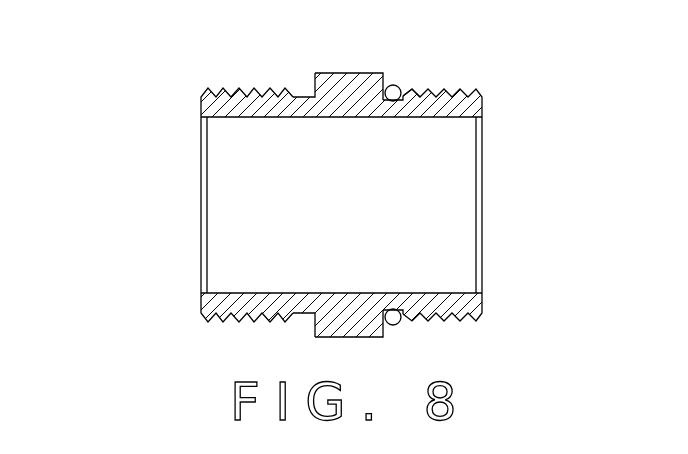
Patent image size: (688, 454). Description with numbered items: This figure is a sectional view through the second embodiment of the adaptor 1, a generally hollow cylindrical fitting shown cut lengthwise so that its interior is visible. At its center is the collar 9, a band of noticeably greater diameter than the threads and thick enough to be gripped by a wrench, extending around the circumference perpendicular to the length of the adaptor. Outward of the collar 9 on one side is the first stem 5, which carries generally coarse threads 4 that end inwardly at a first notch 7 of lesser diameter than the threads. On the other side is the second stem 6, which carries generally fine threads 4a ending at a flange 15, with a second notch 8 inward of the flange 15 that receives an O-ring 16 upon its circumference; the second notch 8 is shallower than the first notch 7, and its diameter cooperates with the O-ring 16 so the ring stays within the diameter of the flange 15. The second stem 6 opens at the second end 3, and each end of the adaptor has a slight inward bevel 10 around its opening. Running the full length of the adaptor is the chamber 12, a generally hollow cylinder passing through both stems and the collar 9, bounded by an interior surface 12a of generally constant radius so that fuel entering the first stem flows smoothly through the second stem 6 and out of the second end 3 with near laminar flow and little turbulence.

The adaptor 1 is at (160, 115).
The second end 3 is at (483, 187).
The threads on the first stem 4 is at (252, 88).
The threads on the second stem 4a is at (465, 88).
The first stem 5 is at (207, 80).
The second stem 6 is at (450, 333).
The first notch 7 is at (300, 100).
The second notch 8 is at (391, 84).
The collar 9 is at (328, 73).
The inward bevel 10 is at (200, 262).
The chamber 12 is at (420, 220).
The interior surface 12a is at (262, 228).
The flange 15 is at (410, 97).
The O-ring 16 is at (398, 88).